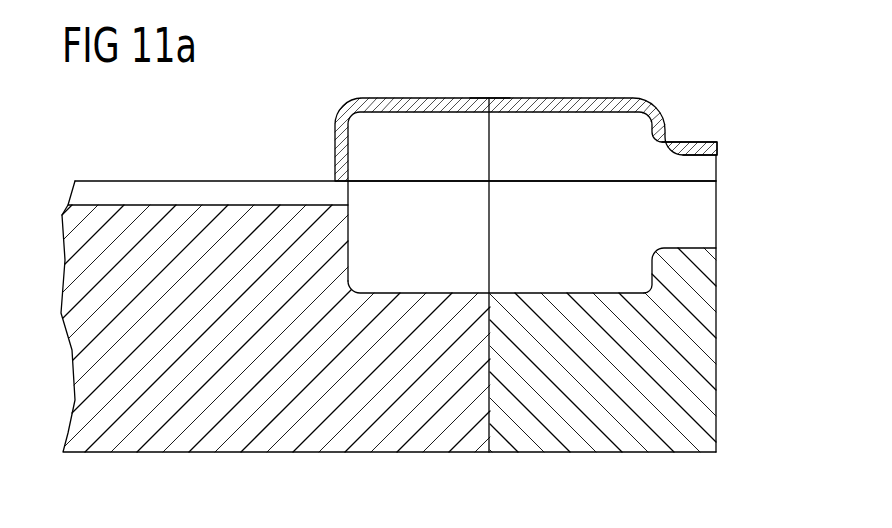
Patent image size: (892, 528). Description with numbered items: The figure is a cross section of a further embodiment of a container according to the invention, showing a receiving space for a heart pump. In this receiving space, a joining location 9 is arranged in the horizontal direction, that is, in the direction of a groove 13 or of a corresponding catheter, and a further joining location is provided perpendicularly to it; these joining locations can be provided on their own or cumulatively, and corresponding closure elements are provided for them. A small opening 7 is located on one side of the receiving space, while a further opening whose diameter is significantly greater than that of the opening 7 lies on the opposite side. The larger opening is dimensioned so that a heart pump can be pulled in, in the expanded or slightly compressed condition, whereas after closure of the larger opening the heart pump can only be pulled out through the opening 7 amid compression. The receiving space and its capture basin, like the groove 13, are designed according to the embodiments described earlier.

The opening 7 is at (348, 196).
The joining location 9 is at (560, 182).
The groove 13 is at (154, 192).